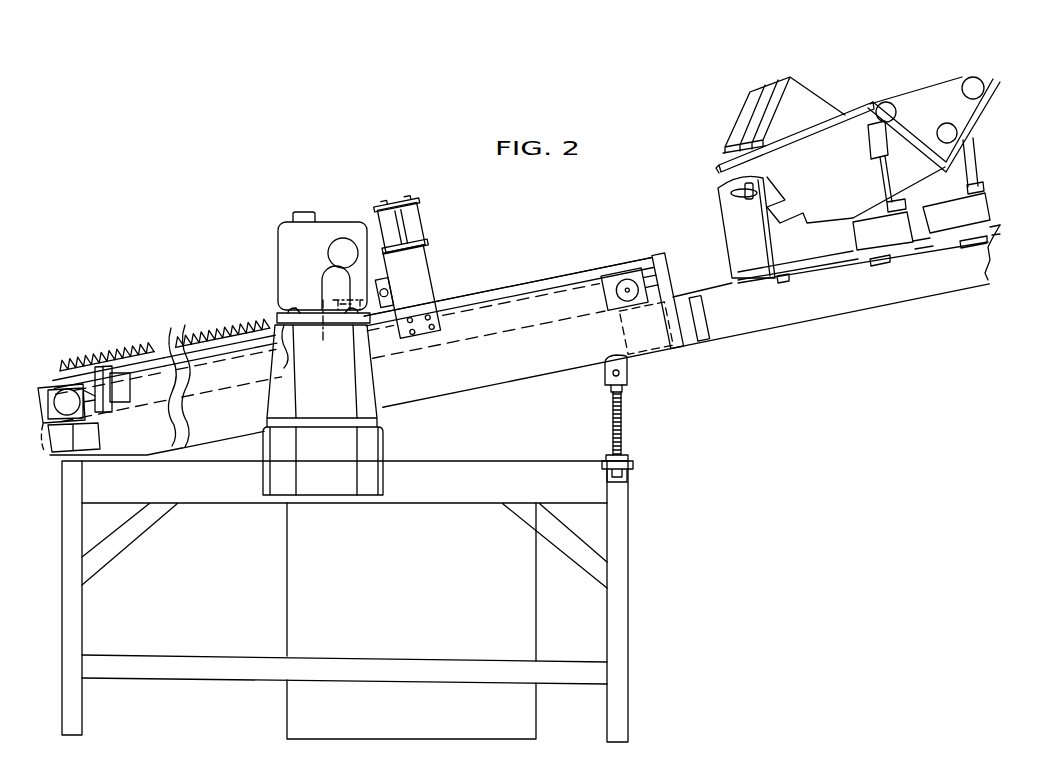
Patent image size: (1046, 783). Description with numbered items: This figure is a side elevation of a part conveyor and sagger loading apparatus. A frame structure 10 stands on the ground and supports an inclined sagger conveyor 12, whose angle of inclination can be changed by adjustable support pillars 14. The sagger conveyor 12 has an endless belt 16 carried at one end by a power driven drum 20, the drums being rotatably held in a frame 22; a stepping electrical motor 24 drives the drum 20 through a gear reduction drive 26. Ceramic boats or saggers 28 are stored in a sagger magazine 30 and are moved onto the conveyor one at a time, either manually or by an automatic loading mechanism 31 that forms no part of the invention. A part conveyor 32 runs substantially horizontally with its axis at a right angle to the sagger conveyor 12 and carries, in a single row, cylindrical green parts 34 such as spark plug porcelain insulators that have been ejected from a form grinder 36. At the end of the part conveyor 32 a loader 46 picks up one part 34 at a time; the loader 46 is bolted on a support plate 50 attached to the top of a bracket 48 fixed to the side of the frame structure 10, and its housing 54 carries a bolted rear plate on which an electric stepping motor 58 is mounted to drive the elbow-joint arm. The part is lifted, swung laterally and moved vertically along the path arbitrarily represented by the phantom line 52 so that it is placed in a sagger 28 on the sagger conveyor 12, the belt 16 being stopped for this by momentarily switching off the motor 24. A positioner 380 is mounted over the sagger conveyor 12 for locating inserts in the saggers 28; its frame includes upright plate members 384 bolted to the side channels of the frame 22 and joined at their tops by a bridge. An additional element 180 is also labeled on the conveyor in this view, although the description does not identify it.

The frame structure 10 is at (84, 638).
The sagger conveyor 12 is at (518, 385).
The adjustable support pillars 14 is at (622, 428).
The endless belt 16 is at (546, 326).
The power driven drum 20 is at (50, 452).
The frame 22 is at (589, 355).
The stepping electrical motor 24 is at (126, 409).
The gear reduction drive 26 is at (45, 385).
The saggers 28 is at (753, 120).
The sagger magazine 30 is at (988, 76).
The automatic loading mechanism 31 is at (709, 237).
The part conveyor 32 is at (352, 335).
The parts 34 is at (118, 344).
The form grinder 36 is at (283, 596).
The loader 46 is at (276, 254).
The bracket 48 is at (274, 403).
The support plate 50 is at (289, 349).
The phantom line 52 is at (320, 283).
The housing 54 is at (290, 281).
The electric stepping motor 58 is at (345, 238).
The spiked chain 180 is at (164, 344).
The positioner 380 is at (415, 197).
The upright plate members 384 is at (421, 280).